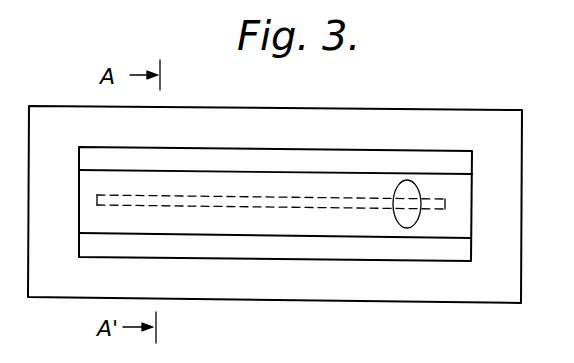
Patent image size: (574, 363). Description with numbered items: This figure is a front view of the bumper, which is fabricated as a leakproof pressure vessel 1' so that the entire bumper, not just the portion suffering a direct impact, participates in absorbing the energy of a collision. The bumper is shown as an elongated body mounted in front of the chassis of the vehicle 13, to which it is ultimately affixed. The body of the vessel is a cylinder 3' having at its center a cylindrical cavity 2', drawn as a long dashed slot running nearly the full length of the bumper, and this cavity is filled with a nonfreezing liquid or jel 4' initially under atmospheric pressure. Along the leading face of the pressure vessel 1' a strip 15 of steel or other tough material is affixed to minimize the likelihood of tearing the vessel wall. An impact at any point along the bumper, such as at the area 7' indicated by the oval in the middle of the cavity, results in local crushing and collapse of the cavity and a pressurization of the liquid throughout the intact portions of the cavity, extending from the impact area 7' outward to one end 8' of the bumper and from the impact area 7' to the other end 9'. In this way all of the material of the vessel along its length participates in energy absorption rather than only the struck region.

The chassis of the vehicle 13 is at (392, 123).
The leakproof pressure vessel 1' is at (275, 242).
The cylinder 3' is at (275, 149).
The strip 15 is at (302, 235).
The cavity 2' is at (271, 164).
The liquid 4' is at (303, 160).
The impact area 7' is at (412, 174).
The end of the bumper 8' is at (92, 190).
The end of the bumper 9' is at (457, 194).